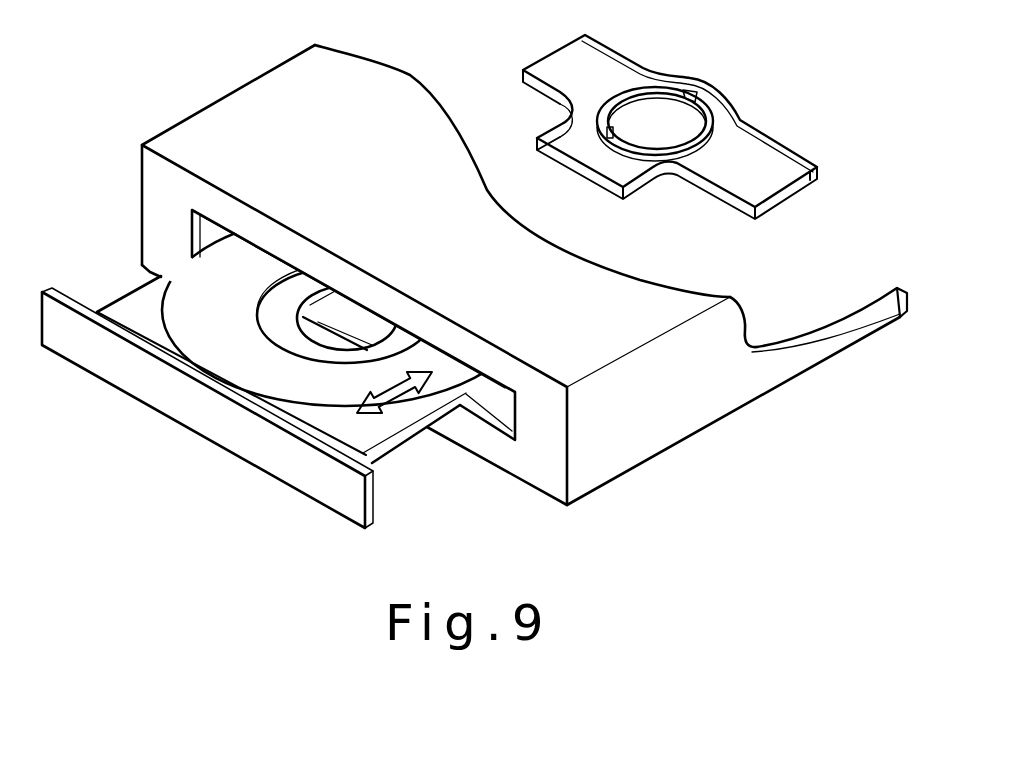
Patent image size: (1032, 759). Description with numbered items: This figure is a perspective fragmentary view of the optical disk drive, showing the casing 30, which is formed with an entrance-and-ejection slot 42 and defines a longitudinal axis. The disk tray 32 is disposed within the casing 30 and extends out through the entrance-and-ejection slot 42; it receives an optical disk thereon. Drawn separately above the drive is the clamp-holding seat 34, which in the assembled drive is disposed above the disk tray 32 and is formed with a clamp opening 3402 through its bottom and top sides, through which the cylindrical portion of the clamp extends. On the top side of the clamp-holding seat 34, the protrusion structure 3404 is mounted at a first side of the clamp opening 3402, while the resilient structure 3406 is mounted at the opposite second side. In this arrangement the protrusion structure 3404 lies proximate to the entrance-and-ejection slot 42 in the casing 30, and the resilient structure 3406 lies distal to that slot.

The casing 30 is at (258, 102).
The disk tray 32 is at (232, 350).
The clamp-holding seat 34 is at (663, 119).
The clamp opening 3402 is at (627, 124).
The protrusion structure 3404 is at (602, 137).
The resilient structure 3406 is at (705, 94).
The entrance-and-ejection slot 42 is at (505, 415).